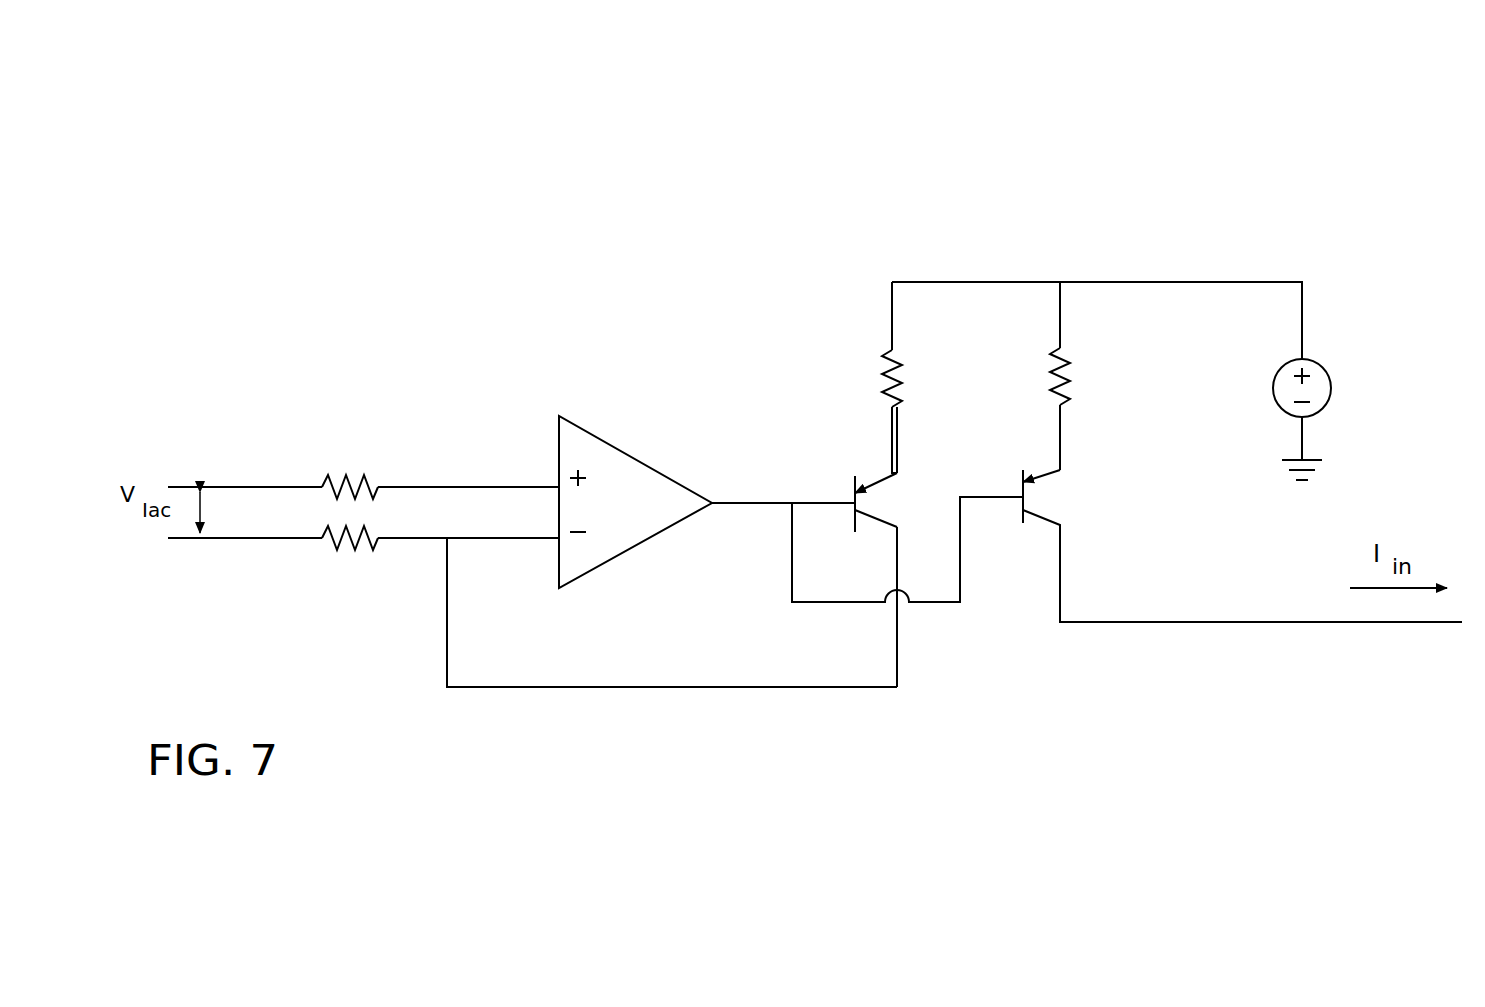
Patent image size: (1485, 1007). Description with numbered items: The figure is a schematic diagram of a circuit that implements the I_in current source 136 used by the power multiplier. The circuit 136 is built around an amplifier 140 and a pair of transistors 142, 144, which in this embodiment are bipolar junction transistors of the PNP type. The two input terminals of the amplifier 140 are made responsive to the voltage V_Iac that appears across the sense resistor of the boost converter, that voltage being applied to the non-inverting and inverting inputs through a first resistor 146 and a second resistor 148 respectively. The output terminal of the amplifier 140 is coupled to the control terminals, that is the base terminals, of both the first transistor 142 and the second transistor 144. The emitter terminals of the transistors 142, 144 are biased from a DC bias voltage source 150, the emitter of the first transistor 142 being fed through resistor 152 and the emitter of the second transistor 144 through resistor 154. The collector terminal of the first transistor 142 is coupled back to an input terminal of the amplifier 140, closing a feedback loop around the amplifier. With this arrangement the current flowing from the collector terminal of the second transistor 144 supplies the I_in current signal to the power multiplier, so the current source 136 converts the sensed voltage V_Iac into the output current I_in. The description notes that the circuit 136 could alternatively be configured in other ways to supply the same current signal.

The current source 136 is at (1103, 217).
The amplifier 140 is at (620, 448).
The first transistor 142 is at (868, 473).
The second transistor 144 is at (1050, 497).
The resistor 146 is at (361, 478).
The resistor 148 is at (332, 550).
The bias voltage source 150 is at (1332, 383).
The resistor 152 is at (898, 392).
The resistor 154 is at (1065, 372).